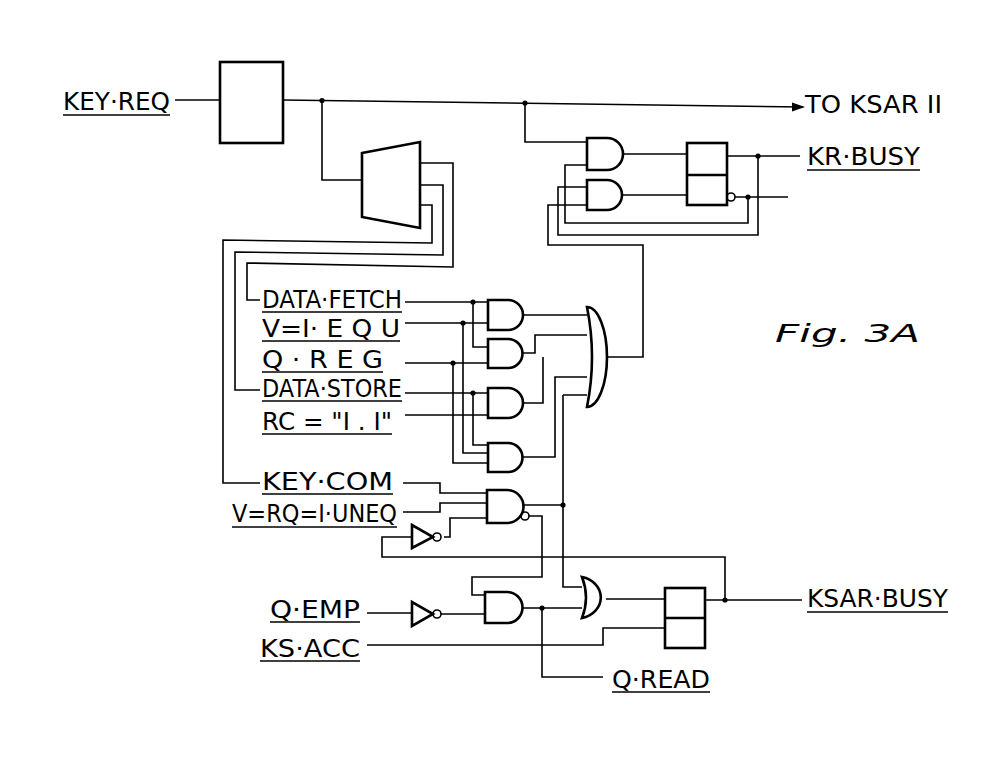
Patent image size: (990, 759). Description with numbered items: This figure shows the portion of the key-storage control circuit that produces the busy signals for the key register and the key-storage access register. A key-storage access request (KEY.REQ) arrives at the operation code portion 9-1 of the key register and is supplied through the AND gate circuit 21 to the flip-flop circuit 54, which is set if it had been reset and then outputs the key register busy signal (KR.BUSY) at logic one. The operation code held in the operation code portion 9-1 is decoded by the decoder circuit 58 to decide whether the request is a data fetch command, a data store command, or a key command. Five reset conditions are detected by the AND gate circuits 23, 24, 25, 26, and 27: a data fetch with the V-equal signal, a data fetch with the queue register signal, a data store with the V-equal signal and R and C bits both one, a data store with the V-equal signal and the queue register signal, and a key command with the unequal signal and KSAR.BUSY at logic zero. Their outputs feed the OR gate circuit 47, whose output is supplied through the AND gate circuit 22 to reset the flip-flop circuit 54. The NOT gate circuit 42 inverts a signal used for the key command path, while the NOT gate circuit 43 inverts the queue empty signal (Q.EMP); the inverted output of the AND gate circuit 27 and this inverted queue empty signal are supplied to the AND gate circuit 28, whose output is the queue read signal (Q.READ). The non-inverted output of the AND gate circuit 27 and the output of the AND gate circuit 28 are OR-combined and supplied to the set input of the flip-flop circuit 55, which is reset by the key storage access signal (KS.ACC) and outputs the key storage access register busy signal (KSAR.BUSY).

The operation code portion 9-1 is at (278, 62).
The decoder circuit 58 is at (385, 145).
The AND gate circuit 21 is at (612, 140).
The AND gate circuit 22 is at (615, 182).
The flip-flop circuit 54 is at (722, 143).
The AND gate circuit 23 is at (512, 300).
The AND gate circuit 24 is at (515, 340).
The AND gate circuit 25 is at (524, 415).
The AND gate circuit 26 is at (525, 470).
The OR gate circuit 47 is at (607, 393).
The AND gate circuit 27 is at (520, 495).
The NOT gate circuit 42 is at (420, 548).
The NOT gate circuit 43 is at (412, 607).
The AND gate circuit 28 is at (600, 587).
The flip-flop circuit 55 is at (707, 620).